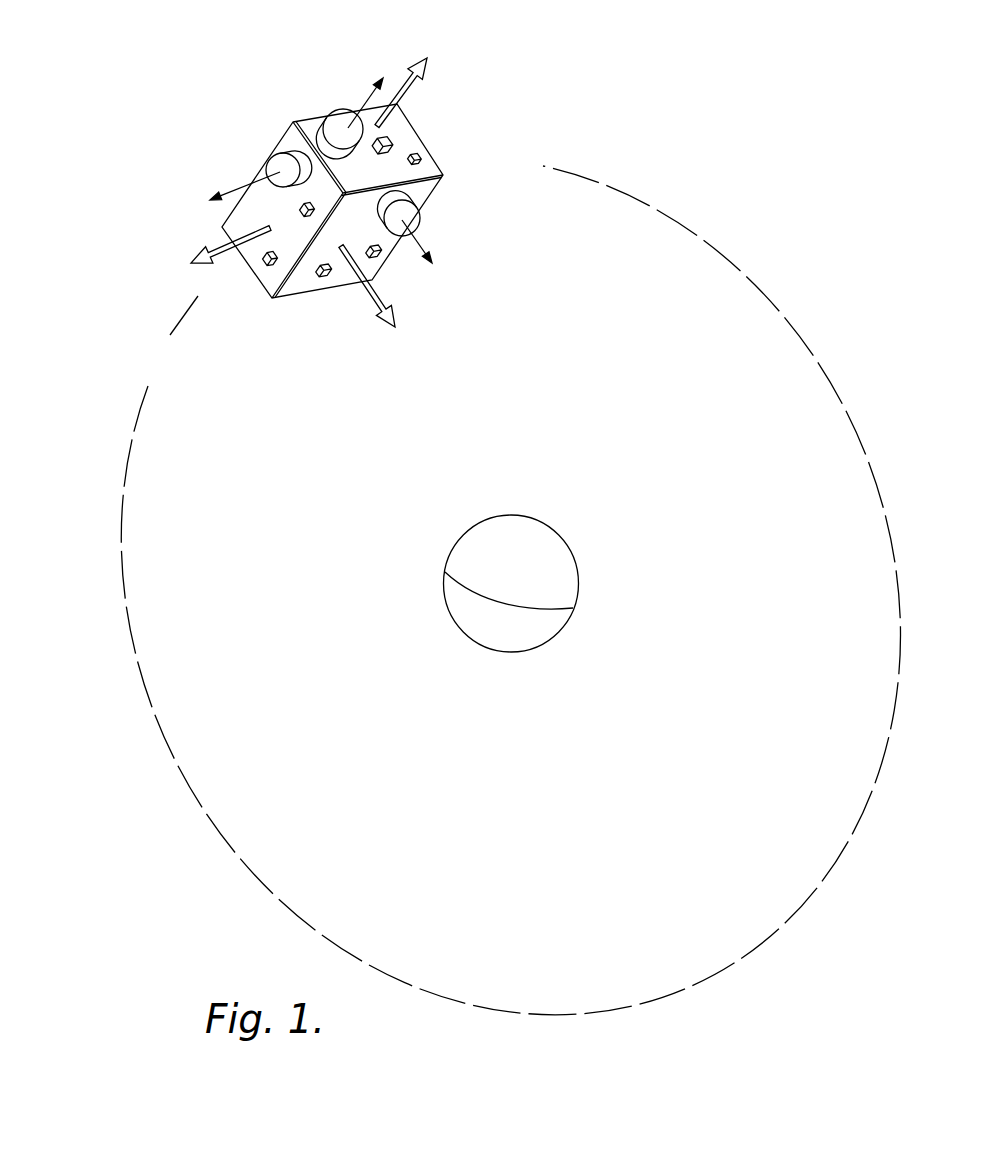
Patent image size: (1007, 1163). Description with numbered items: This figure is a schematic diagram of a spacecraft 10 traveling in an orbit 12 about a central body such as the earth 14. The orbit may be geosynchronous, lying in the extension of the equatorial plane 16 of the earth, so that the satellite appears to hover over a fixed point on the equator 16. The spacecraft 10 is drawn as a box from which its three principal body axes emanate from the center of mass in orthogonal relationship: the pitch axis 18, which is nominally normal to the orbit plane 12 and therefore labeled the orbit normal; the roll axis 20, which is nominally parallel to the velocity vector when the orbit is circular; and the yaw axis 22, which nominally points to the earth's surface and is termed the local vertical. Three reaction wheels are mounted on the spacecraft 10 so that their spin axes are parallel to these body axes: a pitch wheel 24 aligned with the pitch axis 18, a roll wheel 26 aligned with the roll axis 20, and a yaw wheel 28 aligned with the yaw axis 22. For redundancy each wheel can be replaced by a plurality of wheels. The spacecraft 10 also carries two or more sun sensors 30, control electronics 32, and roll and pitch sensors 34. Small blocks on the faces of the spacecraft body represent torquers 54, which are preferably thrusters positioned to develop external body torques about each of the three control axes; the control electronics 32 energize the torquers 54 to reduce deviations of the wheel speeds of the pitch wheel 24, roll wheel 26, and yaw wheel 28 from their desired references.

The spacecraft 10 is at (462, 190).
The orbit 12 is at (298, 915).
The earth 14 is at (540, 522).
The equatorial plane 16 is at (537, 610).
The pitch axis 18 is at (393, 87).
The roll axis 20 is at (225, 252).
The yaw axis 22 is at (383, 293).
The pitch wheel 24 is at (348, 128).
The roll wheel 26 is at (280, 172).
The yaw wheel 28 is at (402, 222).
The sun sensors 30 is at (428, 157).
The control electronics 32 is at (390, 140).
The roll and pitch sensors 34 is at (321, 275).
The torquers 54 is at (266, 262).